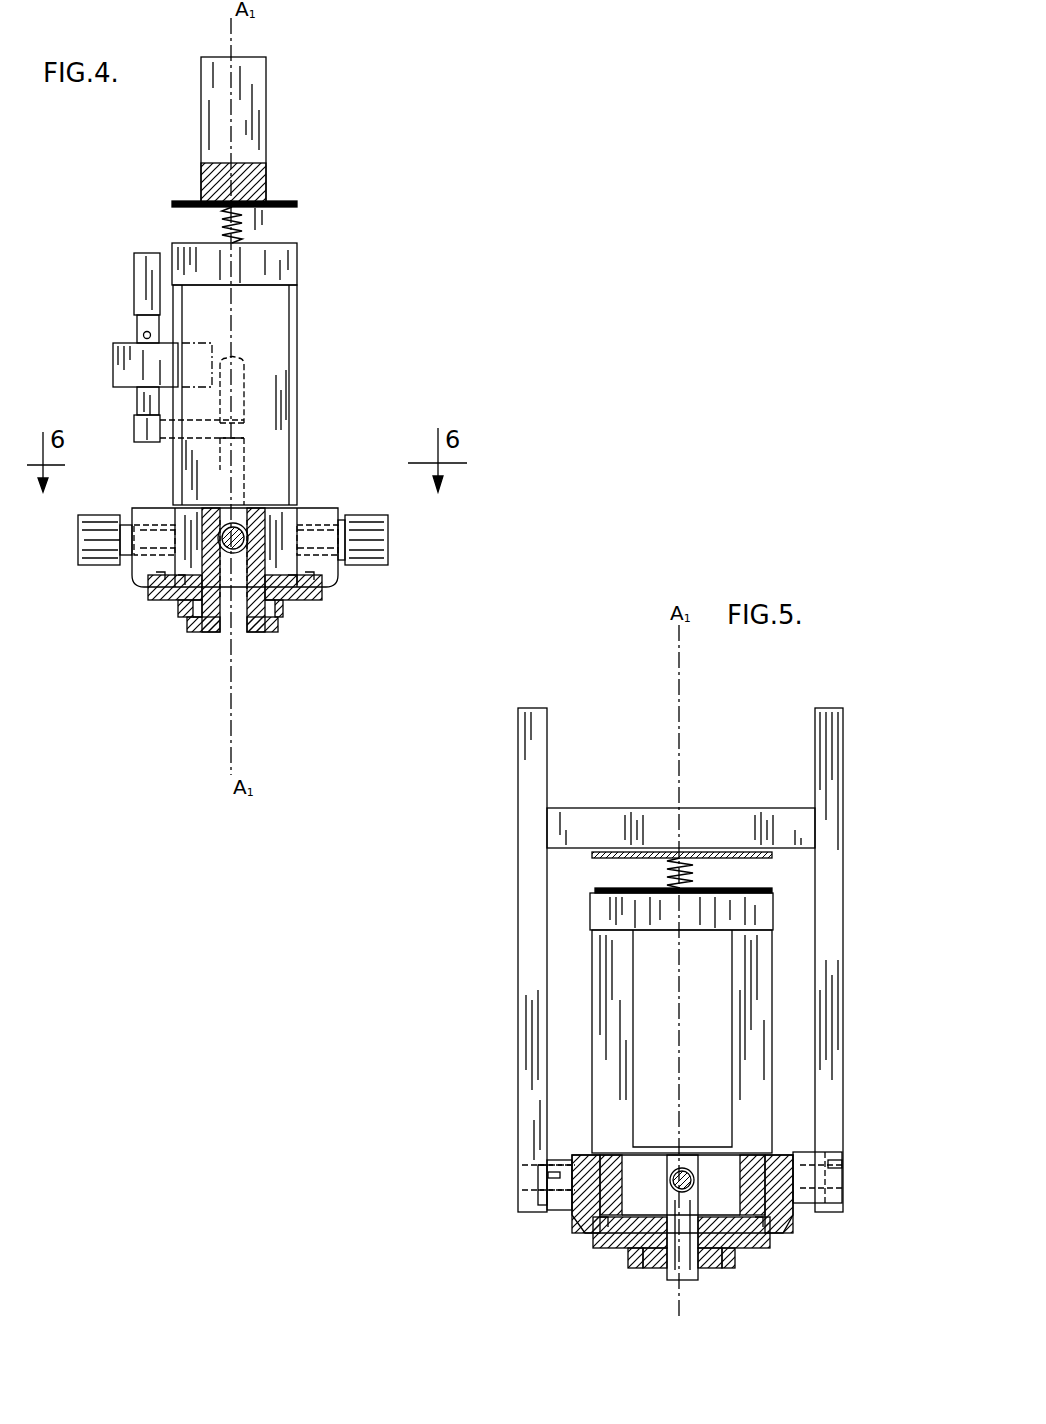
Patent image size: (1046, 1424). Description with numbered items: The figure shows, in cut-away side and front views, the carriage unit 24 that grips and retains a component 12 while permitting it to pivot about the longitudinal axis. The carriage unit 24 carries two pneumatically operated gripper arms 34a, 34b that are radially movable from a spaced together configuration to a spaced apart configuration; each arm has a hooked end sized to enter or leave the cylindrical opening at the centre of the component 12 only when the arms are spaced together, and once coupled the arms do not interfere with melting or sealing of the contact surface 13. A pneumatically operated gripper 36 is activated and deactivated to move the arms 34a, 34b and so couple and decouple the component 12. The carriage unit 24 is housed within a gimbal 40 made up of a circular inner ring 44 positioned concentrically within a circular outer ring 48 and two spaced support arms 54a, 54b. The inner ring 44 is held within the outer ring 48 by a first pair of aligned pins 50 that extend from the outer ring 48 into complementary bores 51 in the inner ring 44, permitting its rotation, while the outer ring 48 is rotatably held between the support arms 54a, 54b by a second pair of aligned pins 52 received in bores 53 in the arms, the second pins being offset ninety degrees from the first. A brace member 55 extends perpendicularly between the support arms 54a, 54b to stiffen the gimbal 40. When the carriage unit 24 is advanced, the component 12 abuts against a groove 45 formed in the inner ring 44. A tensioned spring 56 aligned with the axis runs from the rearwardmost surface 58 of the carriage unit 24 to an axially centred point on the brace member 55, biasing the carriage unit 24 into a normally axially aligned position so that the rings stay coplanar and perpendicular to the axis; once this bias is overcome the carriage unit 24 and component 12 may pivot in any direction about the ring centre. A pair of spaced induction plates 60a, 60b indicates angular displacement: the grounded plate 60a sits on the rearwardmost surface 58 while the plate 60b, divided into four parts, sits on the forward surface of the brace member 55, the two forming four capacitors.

In FIG. 4, the component 12 is at (280, 618).
In FIG. 5, the component 12 is at (710, 1255).
In FIG. 4, the contact surface 13 is at (167, 603).
In FIG. 5, the contact surface 13 is at (607, 1250).
In FIG. 4, the carriage unit 24 is at (258, 337).
In FIG. 5, the carriage unit 24 is at (757, 985).
In FIG. 4, the gripper arm 34a is at (257, 633).
In FIG. 5, the gripper arm 34a is at (673, 1263).
In FIG. 4, the gripper arm 34b is at (193, 633).
In FIG. 4, the pneumatically operated gripper 36 is at (142, 278).
In FIG. 4, the gimbal 40 is at (370, 563).
In FIG. 4, the inner ring 44 is at (327, 510).
In FIG. 5, the inner ring 44 is at (777, 1220).
In FIG. 4, the groove 45 is at (153, 577).
In FIG. 4, the outer ring 48 is at (78, 522).
In FIG. 5, the outer ring 48 is at (560, 1207).
In FIG. 4, the first pair of aligned pins 50 is at (103, 547).
In FIG. 4, the aligned bores 51 is at (140, 523).
In FIG. 5, the second pair of aligned pins 52 is at (522, 1183).
In FIG. 5, the aligned bores 53 is at (528, 1175).
In FIG. 4, the support arm 54a is at (258, 84).
In FIG. 5, the support arm 54a is at (825, 1087).
In FIG. 5, the support arm 54b is at (528, 982).
In FIG. 4, the brace member 55 is at (266, 170).
In FIG. 5, the brace member 55 is at (578, 830).
In FIG. 4, the tensioned spring 56 is at (222, 230).
In FIG. 5, the tensioned spring 56 is at (710, 885).
In FIG. 5, the rearwardmost surface 58 is at (603, 890).
In FIG. 4, the induction plate 60a is at (290, 236).
In FIG. 5, the induction plate 60a is at (845, 895).
In FIG. 4, the induction plate 60b is at (297, 205).
In FIG. 5, the induction plate 60b is at (608, 860).